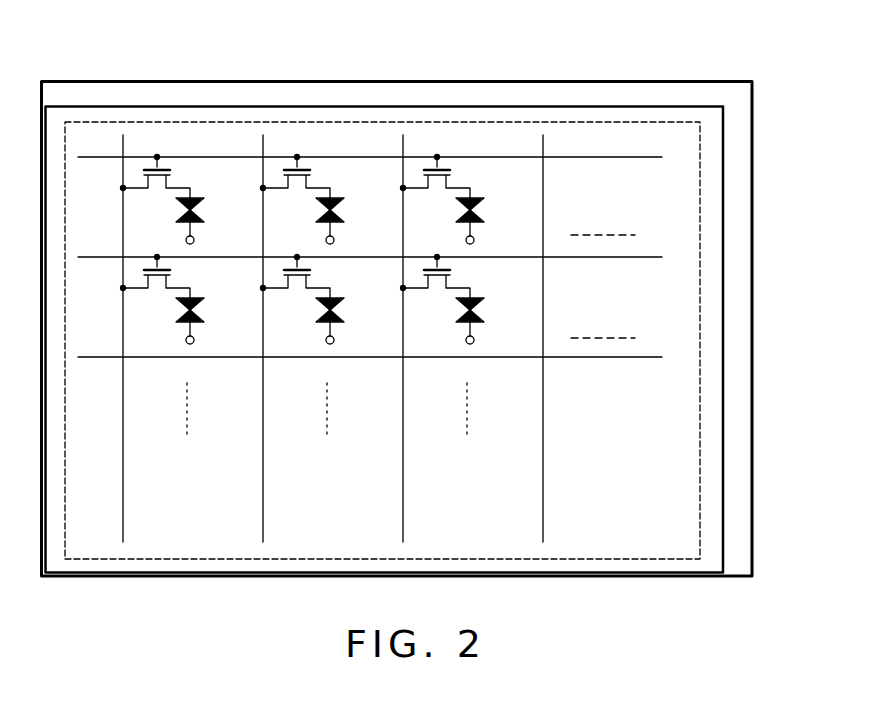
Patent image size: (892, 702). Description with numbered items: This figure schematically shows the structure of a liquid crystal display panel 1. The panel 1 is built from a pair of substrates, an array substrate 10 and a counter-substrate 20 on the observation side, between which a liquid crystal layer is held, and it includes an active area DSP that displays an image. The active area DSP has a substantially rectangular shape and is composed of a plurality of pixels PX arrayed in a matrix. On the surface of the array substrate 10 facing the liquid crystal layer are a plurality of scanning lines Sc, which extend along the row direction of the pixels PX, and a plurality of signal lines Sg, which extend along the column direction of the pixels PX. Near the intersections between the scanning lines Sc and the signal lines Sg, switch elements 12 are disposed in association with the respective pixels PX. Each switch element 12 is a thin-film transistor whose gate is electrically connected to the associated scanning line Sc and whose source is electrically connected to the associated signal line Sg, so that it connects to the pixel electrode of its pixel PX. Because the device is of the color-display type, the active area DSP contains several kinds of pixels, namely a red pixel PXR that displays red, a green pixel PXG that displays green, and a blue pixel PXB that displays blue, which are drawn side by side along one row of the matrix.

The liquid crystal display panel 1 is at (789, 101).
The array substrate 10 is at (752, 208).
The counter-substrate 20 is at (723, 278).
The active area DSP is at (700, 343).
The pixel PX is at (166, 143).
The red pixel PXR is at (211, 225).
The green pixel PXG is at (324, 204).
The blue pixel PXB is at (463, 204).
The switch element 12 is at (157, 187).
The signal line Sg is at (445, 478).
The scanning line Sc is at (575, 391).